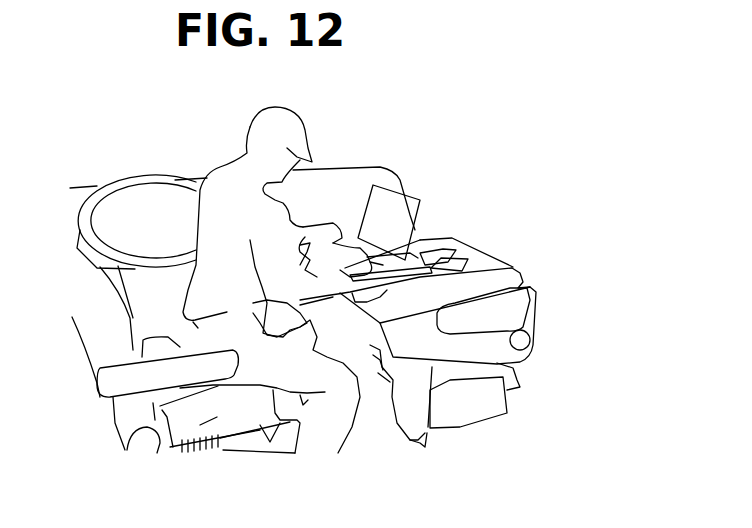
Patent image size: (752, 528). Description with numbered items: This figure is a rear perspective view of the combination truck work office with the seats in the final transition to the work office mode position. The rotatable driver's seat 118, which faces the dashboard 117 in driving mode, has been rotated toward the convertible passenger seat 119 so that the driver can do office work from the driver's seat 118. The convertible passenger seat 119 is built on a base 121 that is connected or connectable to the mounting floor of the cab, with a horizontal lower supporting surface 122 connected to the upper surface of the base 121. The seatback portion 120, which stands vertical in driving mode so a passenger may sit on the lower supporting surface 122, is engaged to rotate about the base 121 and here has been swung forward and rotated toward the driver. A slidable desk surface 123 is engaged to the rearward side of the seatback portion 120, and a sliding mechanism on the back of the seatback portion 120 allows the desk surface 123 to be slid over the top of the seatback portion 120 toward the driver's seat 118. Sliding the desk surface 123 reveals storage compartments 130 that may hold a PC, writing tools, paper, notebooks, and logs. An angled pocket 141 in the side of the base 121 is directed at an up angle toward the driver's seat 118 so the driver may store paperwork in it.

The dashboard 117 is at (343, 185).
The driver's seat 118 is at (99, 333).
The convertible passenger seat 119 is at (470, 256).
The seatback portion 120 is at (523, 288).
The base 121 is at (428, 435).
The lower supporting surface 122 is at (520, 320).
The desk surface 123 is at (440, 205).
The storage compartments 130 is at (458, 262).
The angled pocket 141 is at (475, 402).